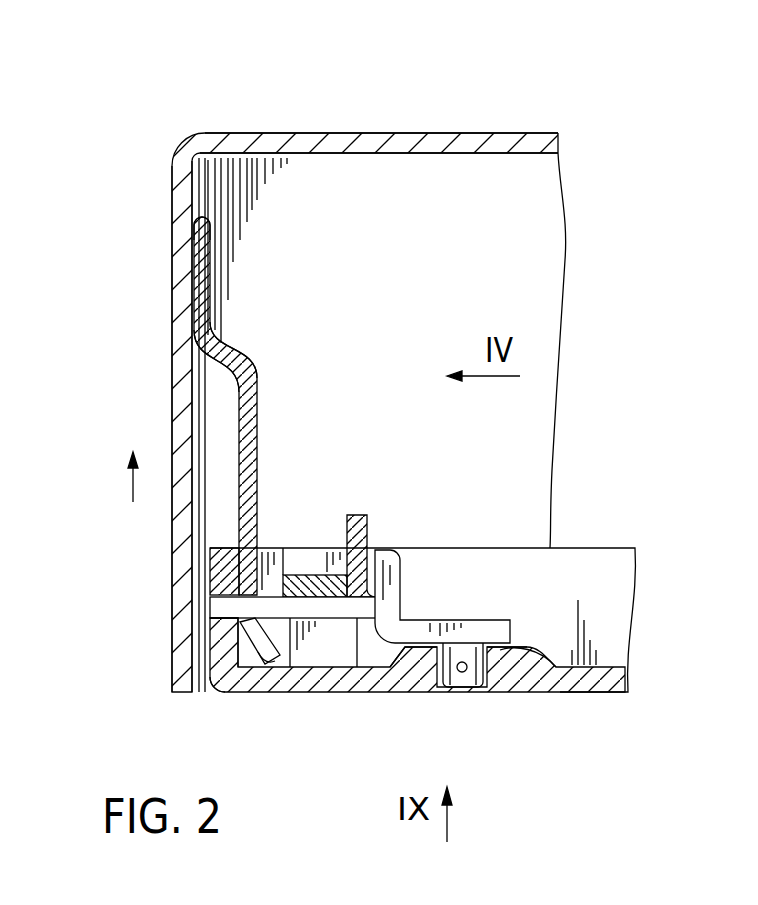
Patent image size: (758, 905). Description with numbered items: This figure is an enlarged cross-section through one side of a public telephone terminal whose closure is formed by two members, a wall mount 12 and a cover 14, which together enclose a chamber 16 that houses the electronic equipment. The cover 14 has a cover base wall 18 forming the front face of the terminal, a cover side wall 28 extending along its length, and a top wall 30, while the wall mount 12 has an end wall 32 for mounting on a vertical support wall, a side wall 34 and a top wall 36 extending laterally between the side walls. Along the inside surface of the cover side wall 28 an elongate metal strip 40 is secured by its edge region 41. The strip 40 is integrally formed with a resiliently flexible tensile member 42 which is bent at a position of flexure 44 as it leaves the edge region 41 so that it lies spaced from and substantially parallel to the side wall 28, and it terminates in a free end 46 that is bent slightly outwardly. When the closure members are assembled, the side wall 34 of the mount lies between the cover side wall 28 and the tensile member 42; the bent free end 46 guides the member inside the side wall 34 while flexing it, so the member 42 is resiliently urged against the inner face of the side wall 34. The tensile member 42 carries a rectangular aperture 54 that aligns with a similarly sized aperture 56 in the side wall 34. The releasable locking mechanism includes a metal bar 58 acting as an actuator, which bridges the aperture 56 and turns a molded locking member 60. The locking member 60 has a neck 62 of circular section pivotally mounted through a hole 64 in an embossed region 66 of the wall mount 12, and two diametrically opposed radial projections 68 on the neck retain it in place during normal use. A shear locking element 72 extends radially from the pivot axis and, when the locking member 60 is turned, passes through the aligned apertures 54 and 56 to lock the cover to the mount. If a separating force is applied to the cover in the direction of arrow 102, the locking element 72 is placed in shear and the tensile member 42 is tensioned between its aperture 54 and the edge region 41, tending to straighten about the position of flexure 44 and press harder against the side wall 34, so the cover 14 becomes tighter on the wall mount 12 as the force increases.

The wall mount 12 is at (625, 680).
The cover 14 is at (237, 133).
The enclosed chamber 16 is at (483, 231).
The cover base wall 18 is at (351, 133).
The cover side wall 28 is at (185, 366).
The top wall 30 is at (545, 237).
The end wall 32 is at (600, 693).
The side wall 34 is at (210, 666).
The top wall 36 is at (615, 568).
The metal strip 40 is at (217, 306).
The edge region 41 is at (215, 248).
The flexible tensile member 42 is at (250, 470).
The position of flexure 44 is at (233, 341).
The free end 46 is at (240, 665).
The rectangular aperture 54 is at (283, 573).
The aperture 56 is at (210, 577).
The metal bar 58 is at (368, 530).
The locking member 60 is at (498, 617).
The neck 62 is at (420, 693).
The hole 64 is at (525, 650).
The embossed region 66 is at (503, 693).
The radial projection 68 is at (460, 693).
The shear locking element 72 is at (225, 607).
The arrow 102 is at (130, 490).